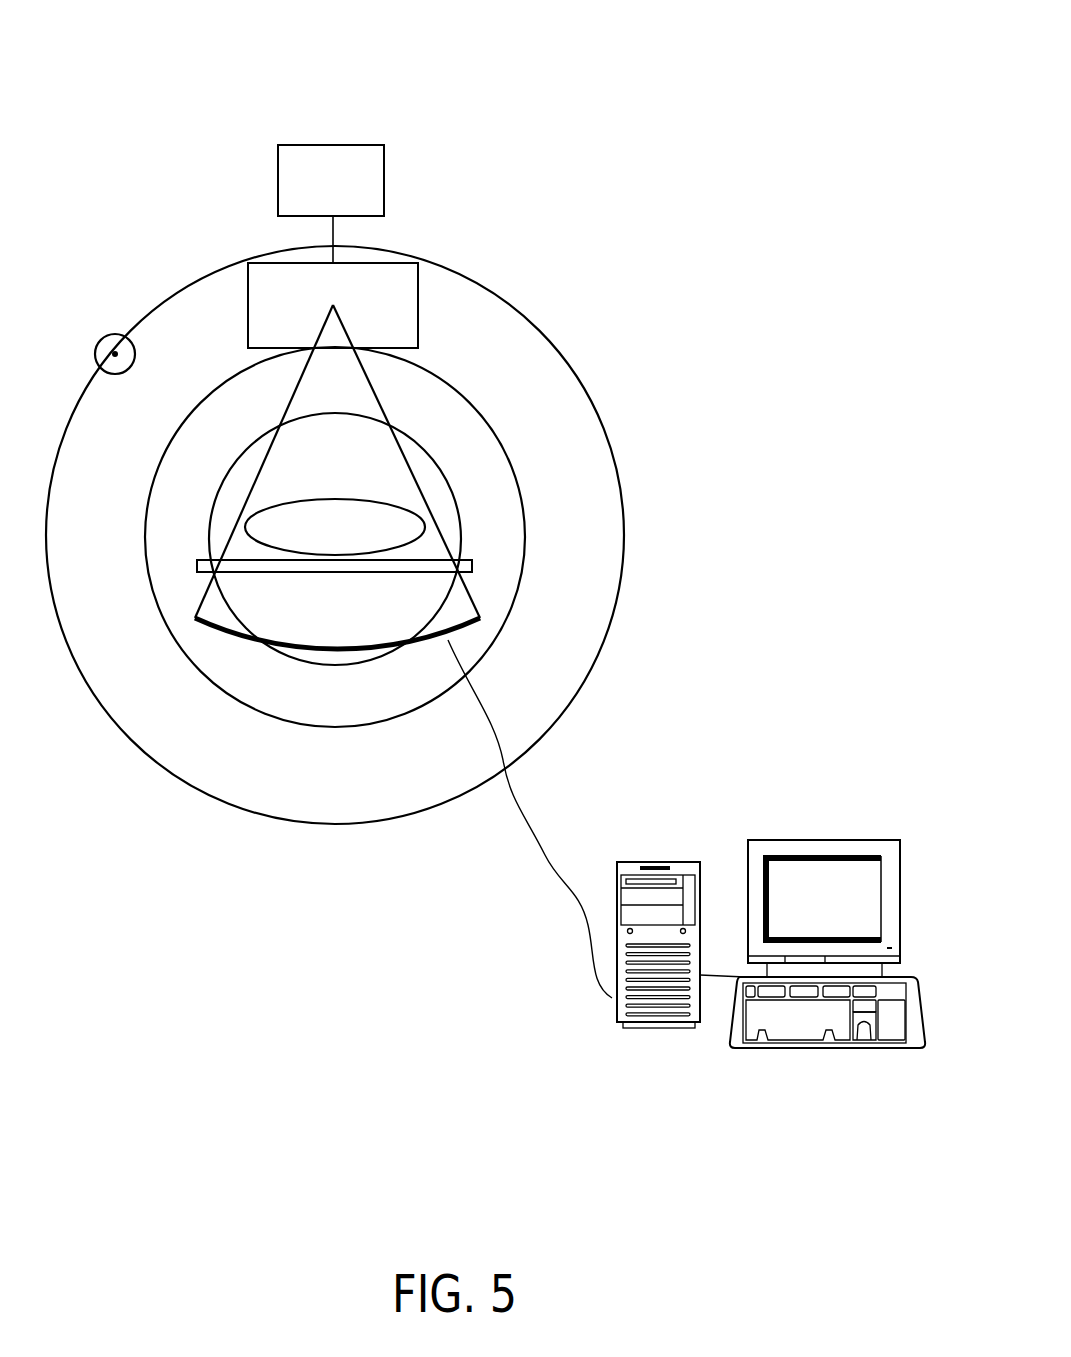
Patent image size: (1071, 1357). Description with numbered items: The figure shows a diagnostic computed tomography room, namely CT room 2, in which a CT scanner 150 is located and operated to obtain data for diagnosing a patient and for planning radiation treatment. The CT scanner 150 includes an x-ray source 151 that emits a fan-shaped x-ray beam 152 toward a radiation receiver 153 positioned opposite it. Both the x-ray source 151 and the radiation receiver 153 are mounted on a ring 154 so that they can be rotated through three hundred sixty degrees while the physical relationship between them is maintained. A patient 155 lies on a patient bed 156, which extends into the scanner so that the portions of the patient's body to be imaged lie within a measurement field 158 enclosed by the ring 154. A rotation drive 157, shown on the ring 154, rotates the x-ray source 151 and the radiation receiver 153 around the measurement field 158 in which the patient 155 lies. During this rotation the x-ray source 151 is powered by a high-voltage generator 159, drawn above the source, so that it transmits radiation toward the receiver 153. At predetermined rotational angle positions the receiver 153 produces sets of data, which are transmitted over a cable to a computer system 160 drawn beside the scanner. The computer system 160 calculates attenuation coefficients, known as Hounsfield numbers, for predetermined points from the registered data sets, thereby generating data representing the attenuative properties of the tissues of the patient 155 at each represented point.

The CT room 2 is at (754, 88).
The CT scanner 150 is at (586, 281).
The x-ray source 151 is at (418, 303).
The fan-shaped x-ray beam 152 is at (380, 416).
The radiation receiver 153 is at (258, 642).
The ring 154 is at (620, 487).
The patient 155 is at (332, 497).
The patient bed 156 is at (355, 573).
The rotation drive 157 is at (95, 360).
The measurement field 158 is at (232, 493).
The high-voltage generator 159 is at (384, 180).
The computer system 160 is at (708, 802).